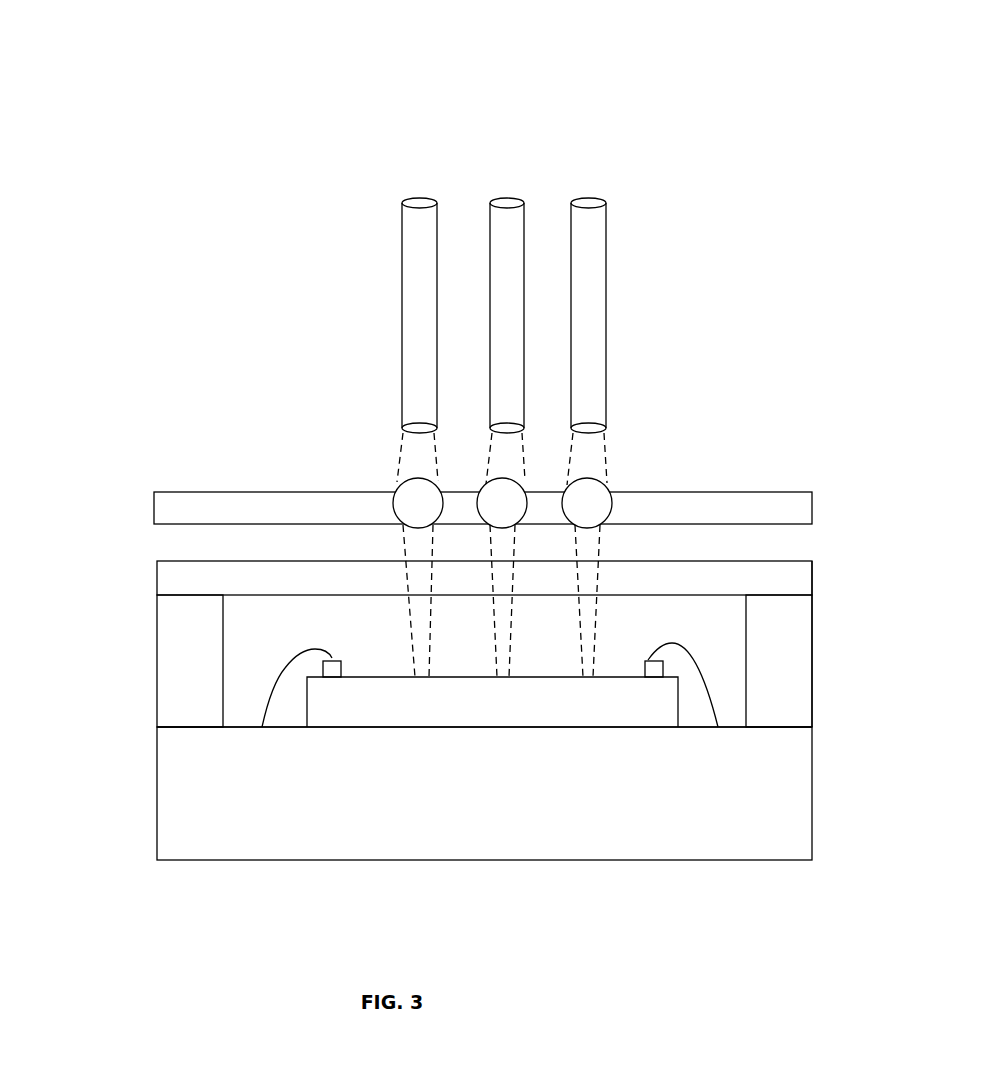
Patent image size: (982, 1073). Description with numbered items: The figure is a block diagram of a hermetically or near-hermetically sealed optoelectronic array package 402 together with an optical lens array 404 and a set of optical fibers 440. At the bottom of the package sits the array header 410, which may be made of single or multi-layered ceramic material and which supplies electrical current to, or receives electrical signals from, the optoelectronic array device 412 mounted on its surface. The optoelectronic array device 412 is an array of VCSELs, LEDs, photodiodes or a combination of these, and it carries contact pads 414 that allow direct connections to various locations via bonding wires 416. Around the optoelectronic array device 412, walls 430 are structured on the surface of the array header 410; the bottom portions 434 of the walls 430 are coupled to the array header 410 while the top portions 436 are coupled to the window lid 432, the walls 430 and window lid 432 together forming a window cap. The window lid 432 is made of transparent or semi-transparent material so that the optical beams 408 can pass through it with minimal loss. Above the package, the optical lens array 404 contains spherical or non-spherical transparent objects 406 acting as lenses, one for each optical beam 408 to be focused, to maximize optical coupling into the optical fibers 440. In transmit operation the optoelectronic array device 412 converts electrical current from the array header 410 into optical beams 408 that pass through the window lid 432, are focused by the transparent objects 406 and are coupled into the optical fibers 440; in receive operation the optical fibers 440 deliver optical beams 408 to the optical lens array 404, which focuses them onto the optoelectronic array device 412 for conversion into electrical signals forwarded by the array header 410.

The optoelectronic array package 402 is at (110, 671).
The optical lens array 404 is at (483, 508).
The transparent objects 406 is at (497, 487).
The optical beams 408 is at (497, 646).
The array header 410 is at (484, 793).
The optoelectronic array device 412 is at (492, 702).
The contact pads 414 is at (493, 661).
The bonding wires 416 is at (499, 684).
The walls 430 is at (484, 661).
The window lid 432 is at (484, 578).
The bottom portions 434 is at (812, 726).
The top portions 436 is at (812, 598).
The optical fibers 440 is at (437, 213).